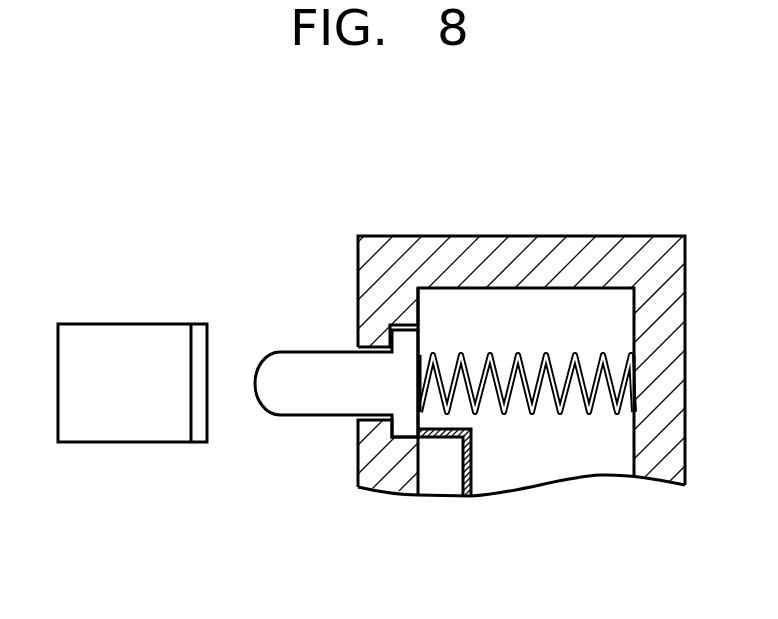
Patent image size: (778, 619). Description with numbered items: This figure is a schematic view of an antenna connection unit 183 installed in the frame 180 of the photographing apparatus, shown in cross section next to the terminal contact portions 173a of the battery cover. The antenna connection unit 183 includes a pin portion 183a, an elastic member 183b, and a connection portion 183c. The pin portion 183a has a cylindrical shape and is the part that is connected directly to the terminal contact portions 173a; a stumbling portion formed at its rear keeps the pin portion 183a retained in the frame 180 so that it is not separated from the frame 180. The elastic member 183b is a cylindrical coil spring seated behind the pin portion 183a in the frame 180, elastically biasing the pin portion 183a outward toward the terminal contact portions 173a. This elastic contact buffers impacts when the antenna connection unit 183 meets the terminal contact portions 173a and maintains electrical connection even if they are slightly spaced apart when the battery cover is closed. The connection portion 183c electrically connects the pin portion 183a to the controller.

The terminal contact portion 173a is at (204, 350).
The frame 180 is at (358, 313).
The antenna connection unit 183 is at (258, 457).
The pin portion 183a is at (285, 395).
The elastic member 183b is at (548, 353).
The connection portion 183c is at (470, 466).